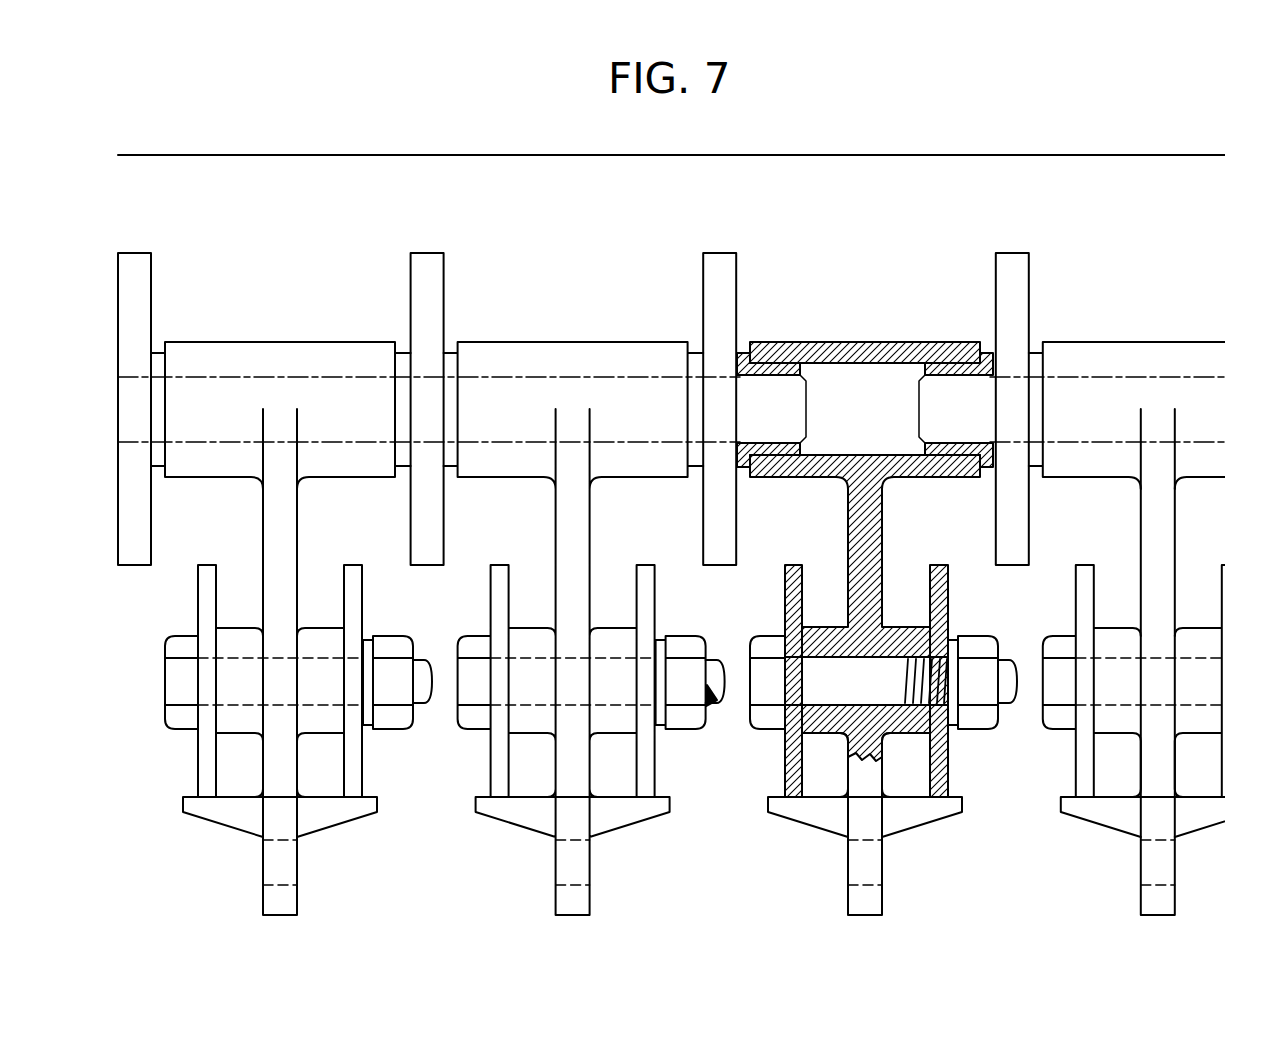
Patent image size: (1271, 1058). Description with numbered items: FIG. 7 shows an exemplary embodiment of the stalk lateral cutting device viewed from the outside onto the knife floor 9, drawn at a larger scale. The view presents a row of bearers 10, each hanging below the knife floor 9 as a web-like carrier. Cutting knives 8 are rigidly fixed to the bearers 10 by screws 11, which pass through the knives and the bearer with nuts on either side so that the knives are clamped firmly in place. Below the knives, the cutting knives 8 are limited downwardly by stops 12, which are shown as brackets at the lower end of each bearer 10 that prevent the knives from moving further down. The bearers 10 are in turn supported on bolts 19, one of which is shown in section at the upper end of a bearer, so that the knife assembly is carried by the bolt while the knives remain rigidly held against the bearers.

The cutting knife 8 is at (940, 760).
The knife floor 9 is at (462, 176).
The bearer 10 is at (868, 532).
The screw 11 is at (710, 712).
The stop 12 is at (363, 807).
The bolt 19 is at (814, 357).